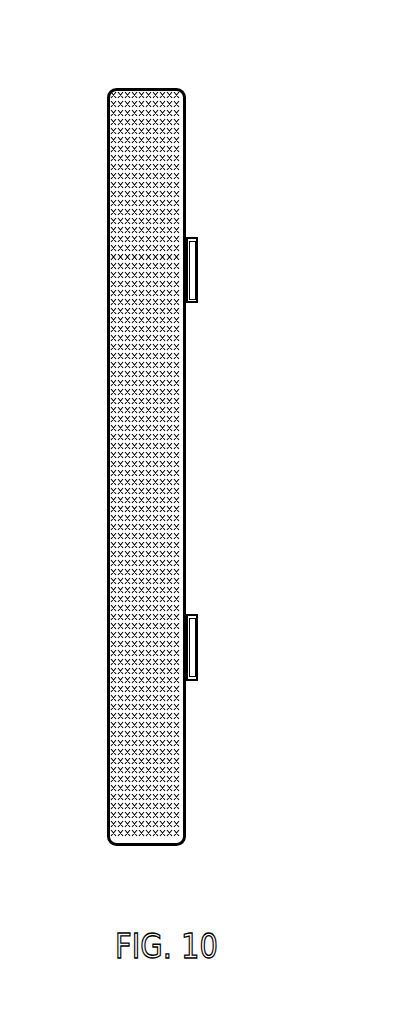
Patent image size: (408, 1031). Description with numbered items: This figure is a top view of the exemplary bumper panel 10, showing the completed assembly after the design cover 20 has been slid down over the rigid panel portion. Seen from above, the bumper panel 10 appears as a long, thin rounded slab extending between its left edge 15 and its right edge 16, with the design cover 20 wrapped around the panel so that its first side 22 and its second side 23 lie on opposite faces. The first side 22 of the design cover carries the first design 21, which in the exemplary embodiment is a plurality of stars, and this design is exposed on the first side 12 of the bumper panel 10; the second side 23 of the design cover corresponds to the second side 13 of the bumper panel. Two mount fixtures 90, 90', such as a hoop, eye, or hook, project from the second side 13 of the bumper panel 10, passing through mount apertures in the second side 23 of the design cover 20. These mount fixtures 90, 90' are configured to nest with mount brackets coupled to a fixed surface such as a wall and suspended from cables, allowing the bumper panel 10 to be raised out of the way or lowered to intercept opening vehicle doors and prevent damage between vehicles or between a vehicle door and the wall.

The bumper panel 10 is at (155, 466).
The first side of the bumper panel 12 is at (107, 633).
The second side of the bumper panel 13 is at (185, 402).
The left edge 15 is at (153, 88).
The right edge 16 is at (160, 846).
The design cover 20 is at (120, 404).
The first design 21 is at (107, 497).
The first side of the design cover 22 is at (107, 537).
The second side of the design cover 23 is at (185, 530).
The mount fixture 90 is at (238, 266).
The mount fixture 90' is at (244, 647).